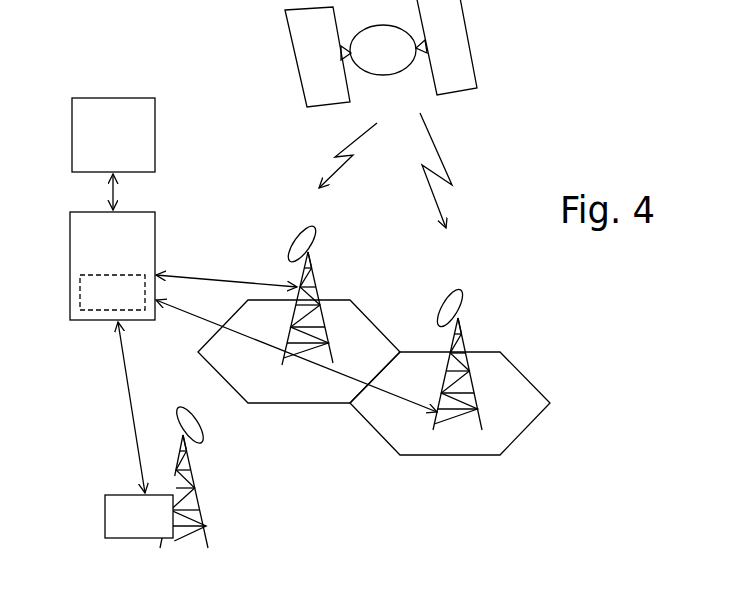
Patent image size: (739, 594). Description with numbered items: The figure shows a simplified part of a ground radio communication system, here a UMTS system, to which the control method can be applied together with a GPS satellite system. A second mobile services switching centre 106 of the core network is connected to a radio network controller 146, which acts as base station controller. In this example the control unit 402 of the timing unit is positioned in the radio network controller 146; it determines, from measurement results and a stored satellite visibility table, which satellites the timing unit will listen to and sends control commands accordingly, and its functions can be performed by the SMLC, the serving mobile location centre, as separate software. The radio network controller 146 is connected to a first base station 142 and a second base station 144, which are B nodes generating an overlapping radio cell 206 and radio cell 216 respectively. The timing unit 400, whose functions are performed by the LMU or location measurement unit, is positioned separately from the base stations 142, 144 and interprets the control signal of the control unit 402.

The control unit of the timing unit 402 is at (470, 56).
The second mobile services switching centre 106 is at (72, 117).
The radio network controller 146 is at (70, 232).
The radio cell 206 is at (313, 405).
The radio cell 216 is at (522, 433).
The first base station 142 is at (323, 307).
The second base station 144 is at (470, 362).
The timing unit 400 is at (105, 515).